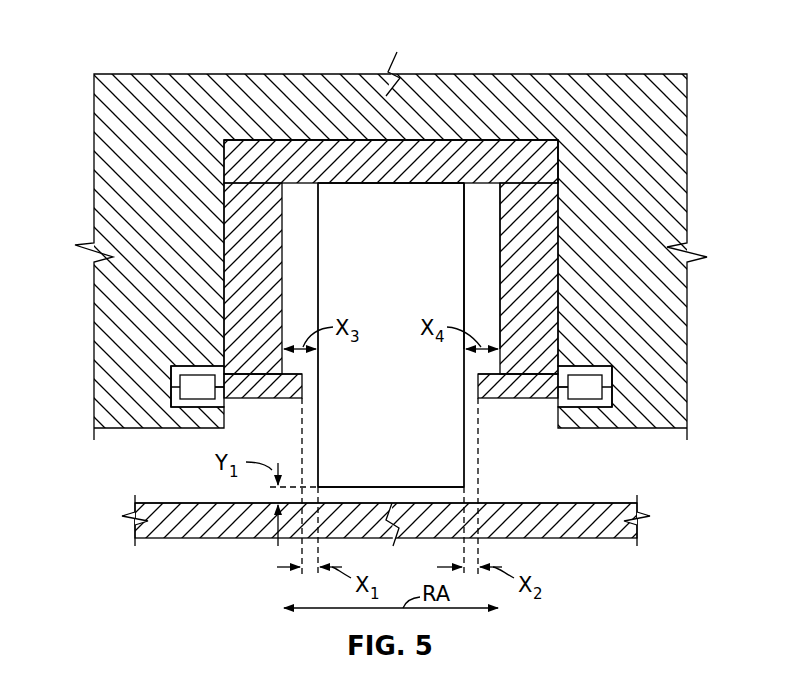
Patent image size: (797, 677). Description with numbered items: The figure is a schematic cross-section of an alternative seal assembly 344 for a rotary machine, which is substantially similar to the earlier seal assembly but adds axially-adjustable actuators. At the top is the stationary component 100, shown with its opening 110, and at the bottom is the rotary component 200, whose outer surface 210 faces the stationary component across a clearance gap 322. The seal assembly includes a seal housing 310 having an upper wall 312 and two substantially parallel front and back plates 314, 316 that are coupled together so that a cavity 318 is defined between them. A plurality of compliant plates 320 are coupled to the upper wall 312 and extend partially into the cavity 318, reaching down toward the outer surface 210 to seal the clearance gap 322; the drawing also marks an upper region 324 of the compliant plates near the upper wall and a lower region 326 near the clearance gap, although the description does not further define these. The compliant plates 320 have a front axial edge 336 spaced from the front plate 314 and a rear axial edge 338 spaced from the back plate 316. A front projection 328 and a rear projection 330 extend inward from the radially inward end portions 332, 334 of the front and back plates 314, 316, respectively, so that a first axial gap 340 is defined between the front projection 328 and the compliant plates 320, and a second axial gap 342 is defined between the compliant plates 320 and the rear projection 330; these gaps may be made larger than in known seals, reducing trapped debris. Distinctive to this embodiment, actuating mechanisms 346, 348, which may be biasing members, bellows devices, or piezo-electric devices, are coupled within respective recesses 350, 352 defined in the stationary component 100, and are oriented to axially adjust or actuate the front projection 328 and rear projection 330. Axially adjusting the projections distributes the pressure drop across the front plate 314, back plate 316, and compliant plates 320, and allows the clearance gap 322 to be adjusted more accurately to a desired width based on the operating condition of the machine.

The seal assembly 344 is at (115, 52).
The stationary component 100 is at (412, 127).
The opening 110 is at (512, 140).
The rotary component 200 is at (640, 538).
The outer surface 210 is at (565, 503).
The seal housing 310 is at (567, 156).
The upper wall 312 is at (412, 173).
The front plate 314 is at (272, 255).
The back plate 316 is at (550, 255).
The cavity 318 is at (481, 218).
The compliant plates 320 is at (412, 380).
The clearance gap 322 is at (460, 497).
The top surface of cavity 324 is at (390, 183).
The lower end of post 326 is at (390, 487).
The front projection 328 is at (240, 377).
The rear projection 330 is at (543, 378).
The radially inward end portion 332 is at (245, 379).
The radially inward end portion 334 is at (548, 378).
The front axial edge 336 is at (318, 308).
The rear axial edge 338 is at (463, 280).
The first axial gap 340 is at (308, 404).
The second axial gap 342 is at (473, 404).
The actuating mechanism 346 is at (195, 392).
The actuating mechanism 348 is at (585, 392).
The recess 350 is at (162, 378).
The recess 352 is at (621, 378).